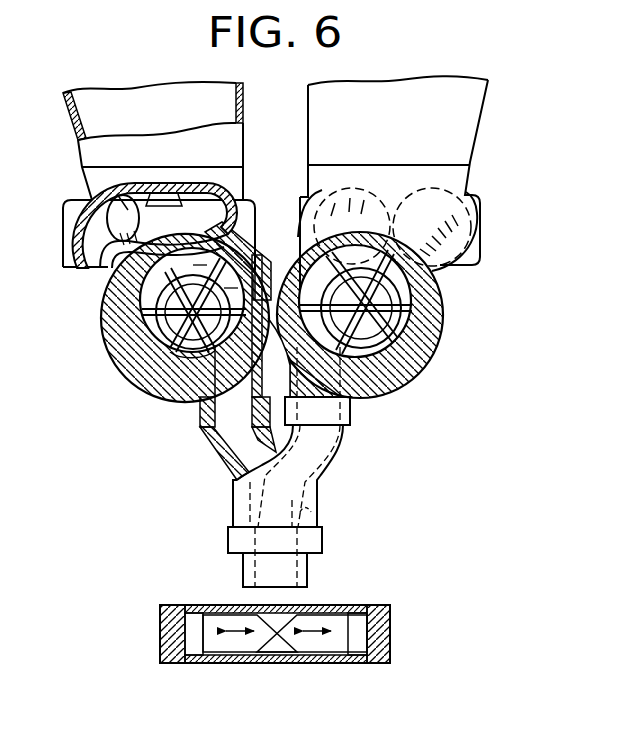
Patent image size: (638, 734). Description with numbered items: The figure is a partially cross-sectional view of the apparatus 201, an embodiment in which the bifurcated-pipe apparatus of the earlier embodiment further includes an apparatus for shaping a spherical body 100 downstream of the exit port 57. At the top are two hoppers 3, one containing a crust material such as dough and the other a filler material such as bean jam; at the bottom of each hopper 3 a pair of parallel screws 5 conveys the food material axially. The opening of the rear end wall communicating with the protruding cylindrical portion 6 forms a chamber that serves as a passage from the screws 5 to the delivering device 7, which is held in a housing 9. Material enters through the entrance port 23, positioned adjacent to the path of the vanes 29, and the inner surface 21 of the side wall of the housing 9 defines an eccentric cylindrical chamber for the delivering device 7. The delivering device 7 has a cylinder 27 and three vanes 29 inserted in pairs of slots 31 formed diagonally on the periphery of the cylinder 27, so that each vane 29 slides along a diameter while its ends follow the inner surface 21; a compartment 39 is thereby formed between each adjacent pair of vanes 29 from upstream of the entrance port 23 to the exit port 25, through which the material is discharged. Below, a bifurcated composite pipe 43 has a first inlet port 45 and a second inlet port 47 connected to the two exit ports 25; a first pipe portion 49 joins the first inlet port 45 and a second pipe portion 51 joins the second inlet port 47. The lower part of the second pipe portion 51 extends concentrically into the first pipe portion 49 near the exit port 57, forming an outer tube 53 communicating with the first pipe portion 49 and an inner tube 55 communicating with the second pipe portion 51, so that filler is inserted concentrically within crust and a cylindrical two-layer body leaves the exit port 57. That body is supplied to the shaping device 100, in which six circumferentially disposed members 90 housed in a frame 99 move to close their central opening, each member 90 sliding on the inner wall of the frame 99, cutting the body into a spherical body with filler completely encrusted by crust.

The hopper 3 is at (244, 93).
The apparatus 201 is at (484, 62).
The screw 5 is at (110, 222).
The protruding cylindrical portion 6 is at (136, 206).
The delivering device 7 is at (265, 290).
The housing 9 is at (124, 360).
The inner surface 21 is at (147, 304).
The entrance port 23 is at (152, 280).
The exit port 25 is at (203, 406).
The cylinder 27 is at (191, 352).
The vane 29 is at (158, 318).
The slot 31 is at (240, 326).
The compartment 39 is at (256, 262).
The bifurcated composite pipe 43 is at (301, 470).
The first inlet port 45 is at (223, 447).
The second inlet port 47 is at (318, 424).
The first pipe portion 49 is at (234, 478).
The second pipe portion 51 is at (318, 462).
The outer tube 53 is at (250, 540).
The inner tube 55 is at (300, 515).
The exit port 57 is at (288, 592).
The member 90 is at (237, 643).
The frame 99 is at (392, 629).
The apparatus for shaping a spherical body 100 is at (339, 632).